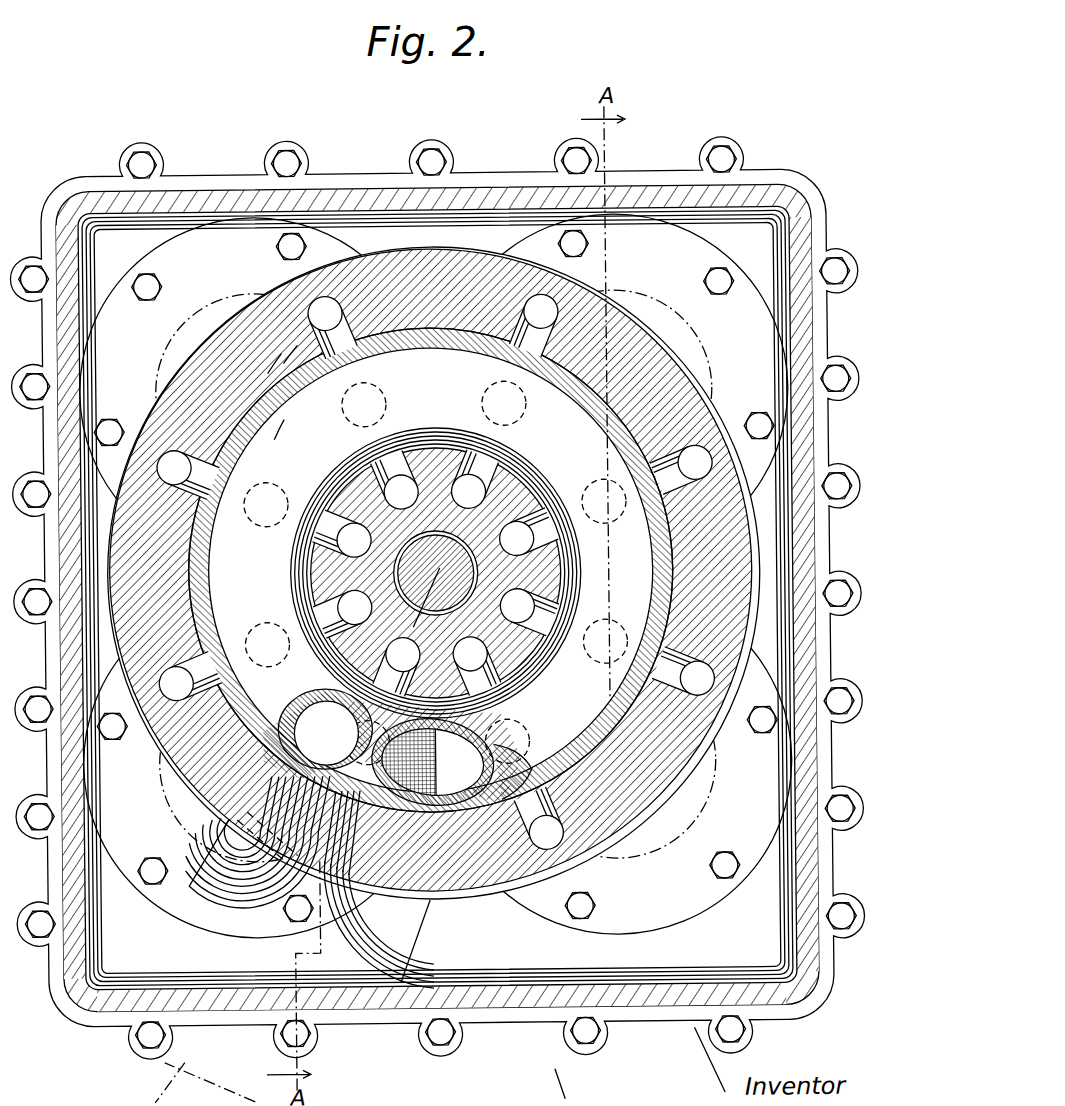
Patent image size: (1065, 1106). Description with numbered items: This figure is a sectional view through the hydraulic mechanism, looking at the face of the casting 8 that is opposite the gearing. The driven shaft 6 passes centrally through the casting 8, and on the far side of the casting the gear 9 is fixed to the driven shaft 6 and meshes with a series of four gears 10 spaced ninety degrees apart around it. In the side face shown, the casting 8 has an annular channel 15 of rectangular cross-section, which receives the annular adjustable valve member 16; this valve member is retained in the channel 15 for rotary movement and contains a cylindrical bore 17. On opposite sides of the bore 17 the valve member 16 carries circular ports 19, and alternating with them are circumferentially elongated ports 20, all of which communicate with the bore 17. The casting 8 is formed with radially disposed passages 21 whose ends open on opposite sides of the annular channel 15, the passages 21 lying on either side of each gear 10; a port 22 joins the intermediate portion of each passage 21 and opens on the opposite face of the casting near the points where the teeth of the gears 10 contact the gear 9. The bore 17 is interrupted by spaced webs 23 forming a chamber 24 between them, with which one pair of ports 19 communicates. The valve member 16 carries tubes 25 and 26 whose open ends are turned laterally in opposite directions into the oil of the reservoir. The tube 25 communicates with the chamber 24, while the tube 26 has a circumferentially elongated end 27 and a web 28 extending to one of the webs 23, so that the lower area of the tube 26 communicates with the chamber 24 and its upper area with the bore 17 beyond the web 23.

The driven shaft 6 is at (462, 580).
The casting 8 is at (470, 262).
The gear 9 is at (312, 572).
The gears 10 is at (163, 356).
The annular channel 15 is at (277, 377).
The annular adjustable valve member 16 is at (292, 372).
The cylindrical bore 17 is at (300, 440).
The ports 19 is at (300, 540).
The circumferentially elongated ports 20 is at (392, 398).
The radial passages 21 is at (332, 302).
The port 22 is at (430, 570).
The webs 23 is at (148, 770).
The chamber 24 is at (325, 729).
The tube 25 is at (215, 808).
The tube 26 is at (452, 892).
The elongated end of tube 27 is at (534, 748).
The web 28 is at (419, 762).